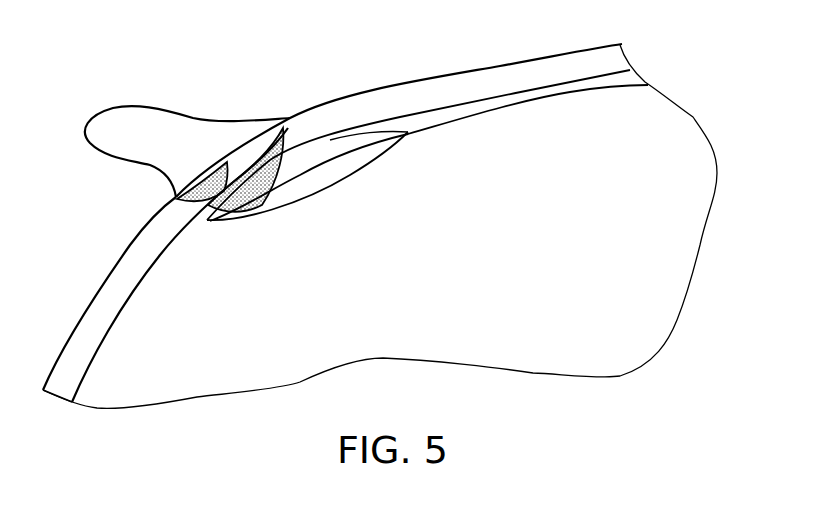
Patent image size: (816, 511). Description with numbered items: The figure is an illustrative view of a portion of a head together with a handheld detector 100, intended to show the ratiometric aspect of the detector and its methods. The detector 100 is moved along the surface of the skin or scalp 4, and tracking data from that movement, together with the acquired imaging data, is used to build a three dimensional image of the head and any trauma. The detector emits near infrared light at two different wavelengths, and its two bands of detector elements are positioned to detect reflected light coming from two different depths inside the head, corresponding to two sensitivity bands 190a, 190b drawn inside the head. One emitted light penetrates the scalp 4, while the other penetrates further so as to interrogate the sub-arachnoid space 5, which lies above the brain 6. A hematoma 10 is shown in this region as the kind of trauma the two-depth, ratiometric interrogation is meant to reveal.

The handheld detector 100 is at (99, 103).
The first sensitivity band 190a is at (217, 167).
The second sensitivity band 190b is at (270, 140).
The scalp 4 is at (571, 62).
The sub-arachnoid space 5 is at (502, 103).
The hematoma 10 is at (327, 183).
The brain 6 is at (636, 356).